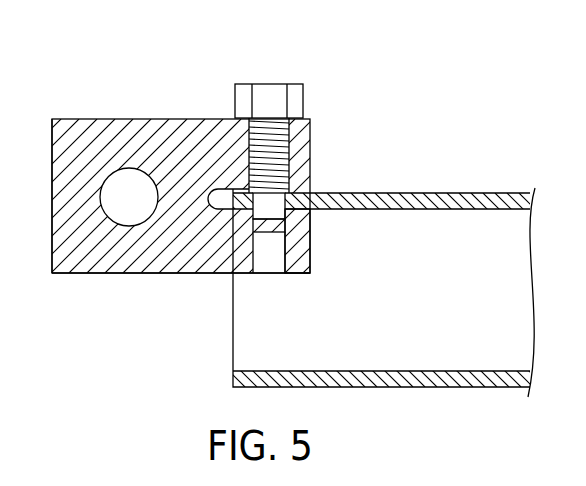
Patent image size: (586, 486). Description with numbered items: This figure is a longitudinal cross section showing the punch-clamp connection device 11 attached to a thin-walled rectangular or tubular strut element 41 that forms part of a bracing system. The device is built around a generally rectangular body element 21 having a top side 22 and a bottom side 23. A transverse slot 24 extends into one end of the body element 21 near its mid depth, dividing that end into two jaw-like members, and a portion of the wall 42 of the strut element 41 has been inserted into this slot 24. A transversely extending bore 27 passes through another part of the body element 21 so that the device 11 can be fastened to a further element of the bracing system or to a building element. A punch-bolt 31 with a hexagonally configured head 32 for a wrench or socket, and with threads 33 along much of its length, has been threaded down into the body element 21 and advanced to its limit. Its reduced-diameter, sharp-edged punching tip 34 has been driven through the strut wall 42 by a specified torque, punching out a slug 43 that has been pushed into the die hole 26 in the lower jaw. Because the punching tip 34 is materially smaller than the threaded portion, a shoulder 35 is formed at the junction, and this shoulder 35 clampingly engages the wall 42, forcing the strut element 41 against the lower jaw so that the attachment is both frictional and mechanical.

The punch-clamp connection device 11 is at (115, 54).
The body element 21 is at (83, 119).
The top side 22 is at (176, 119).
The bottom side 23 is at (76, 274).
The transverse slot 24 is at (232, 188).
The die hole 26 is at (265, 274).
The transversely extending bore 27 is at (130, 226).
The punch-bolt 31 is at (272, 83).
The hexagonally configured head 32 is at (303, 97).
The threads 33 is at (310, 138).
The punching tip 34 is at (305, 220).
The shoulder 35 is at (300, 196).
The strut element 41 is at (398, 193).
The wall 42 is at (480, 210).
The slug 43 is at (305, 252).